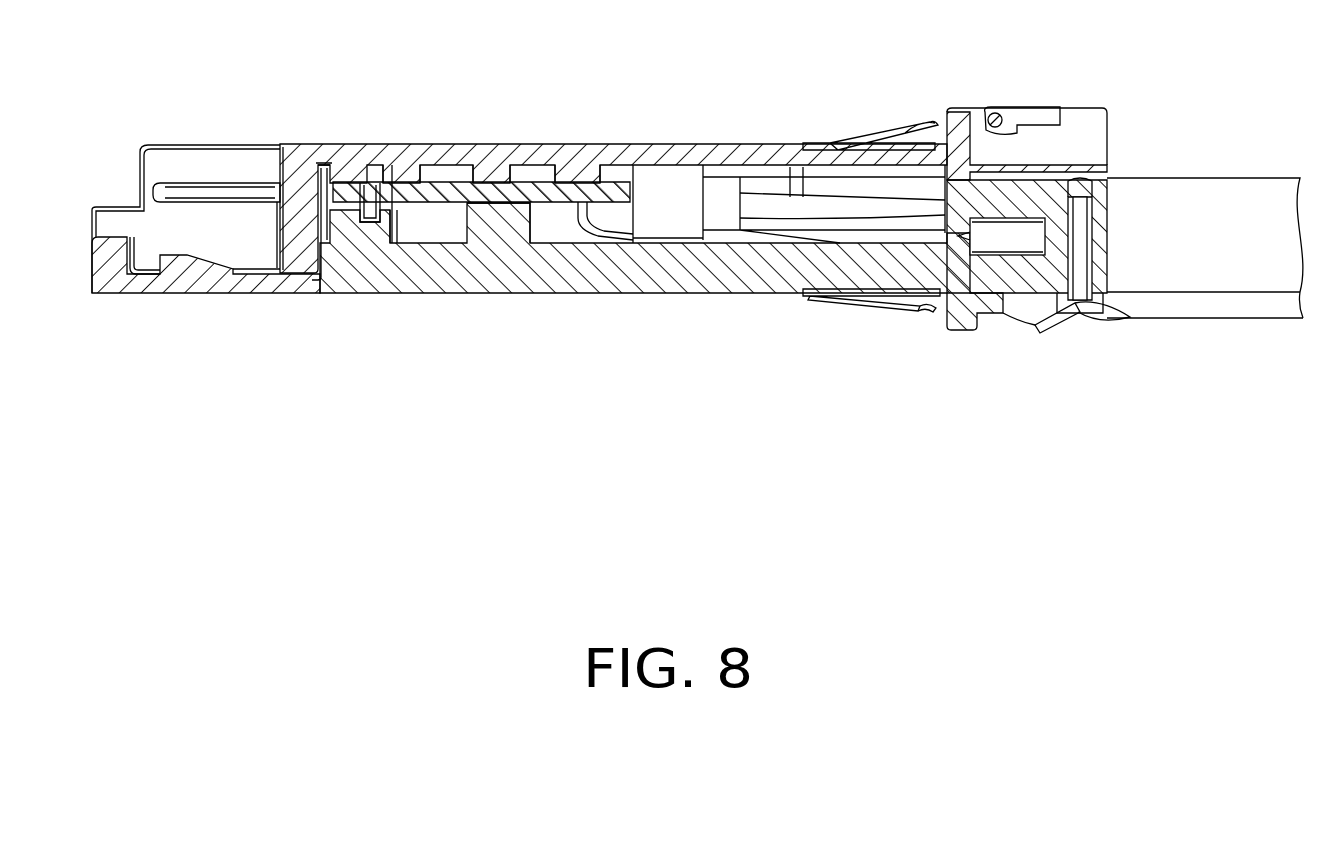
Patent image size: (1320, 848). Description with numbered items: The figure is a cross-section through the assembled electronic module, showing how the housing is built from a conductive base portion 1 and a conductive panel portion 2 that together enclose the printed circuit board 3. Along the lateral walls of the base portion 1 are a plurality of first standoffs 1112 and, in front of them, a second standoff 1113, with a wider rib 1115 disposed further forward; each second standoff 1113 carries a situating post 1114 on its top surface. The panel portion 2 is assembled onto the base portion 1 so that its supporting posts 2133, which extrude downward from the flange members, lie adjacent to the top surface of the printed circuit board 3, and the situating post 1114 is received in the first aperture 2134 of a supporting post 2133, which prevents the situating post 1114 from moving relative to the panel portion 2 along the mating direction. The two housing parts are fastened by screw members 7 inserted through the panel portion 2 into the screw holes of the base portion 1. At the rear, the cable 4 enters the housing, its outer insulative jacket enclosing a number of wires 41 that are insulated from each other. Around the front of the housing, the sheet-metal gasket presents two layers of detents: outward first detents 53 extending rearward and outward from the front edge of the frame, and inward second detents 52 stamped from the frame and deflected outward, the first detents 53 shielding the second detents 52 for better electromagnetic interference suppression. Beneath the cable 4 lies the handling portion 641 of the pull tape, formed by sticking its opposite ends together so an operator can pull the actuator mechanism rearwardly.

The conductive base portion 1 is at (638, 155).
The conductive panel portion 2 is at (610, 270).
The printed circuit board 3 is at (202, 190).
The cable 4 is at (1207, 225).
The screw members 7 is at (1110, 227).
The wires 41 is at (817, 203).
The second detents 52 is at (920, 310).
The first detents 53 is at (933, 312).
The handling portion 641 is at (1203, 323).
The first standoffs 1112 is at (533, 178).
The second standoff 1113 is at (392, 220).
The situating post 1114 is at (370, 210).
The wider rib 1115 is at (300, 225).
The supporting post 2133 is at (495, 222).
The first aperture 2134 is at (398, 222).